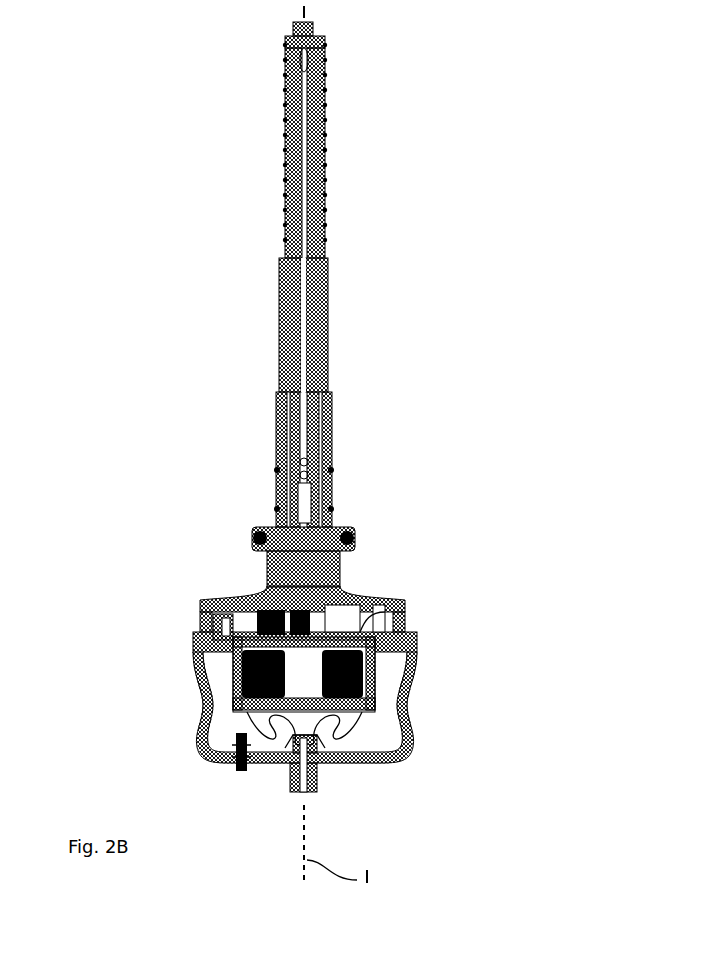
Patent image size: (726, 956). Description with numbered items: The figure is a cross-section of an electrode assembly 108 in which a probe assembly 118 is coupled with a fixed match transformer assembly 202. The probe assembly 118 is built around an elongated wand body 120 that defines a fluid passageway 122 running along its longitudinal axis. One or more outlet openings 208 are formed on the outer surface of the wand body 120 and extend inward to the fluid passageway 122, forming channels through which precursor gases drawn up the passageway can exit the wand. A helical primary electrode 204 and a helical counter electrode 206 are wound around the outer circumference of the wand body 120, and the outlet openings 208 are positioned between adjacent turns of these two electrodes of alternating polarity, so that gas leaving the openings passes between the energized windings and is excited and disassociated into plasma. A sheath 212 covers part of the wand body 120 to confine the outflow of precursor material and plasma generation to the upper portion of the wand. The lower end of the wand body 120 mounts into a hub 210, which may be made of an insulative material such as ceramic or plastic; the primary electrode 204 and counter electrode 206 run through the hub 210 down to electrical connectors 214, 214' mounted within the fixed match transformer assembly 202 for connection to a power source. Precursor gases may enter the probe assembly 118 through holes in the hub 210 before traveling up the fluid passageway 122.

The electrode assembly 108 is at (617, 750).
The probe assembly 118 is at (245, 272).
The wand body 120 is at (326, 170).
The fluid passageway 122 is at (303, 358).
The fixed match transformer assembly 202 is at (213, 717).
The primary electrode 204 is at (330, 417).
The counter electrode 206 is at (278, 416).
The outlet openings 208 is at (285, 130).
The hub 210 is at (335, 523).
The sheath 212 is at (322, 337).
The electrical connector 214 is at (393, 615).
The electrical connector 214' is at (194, 598).